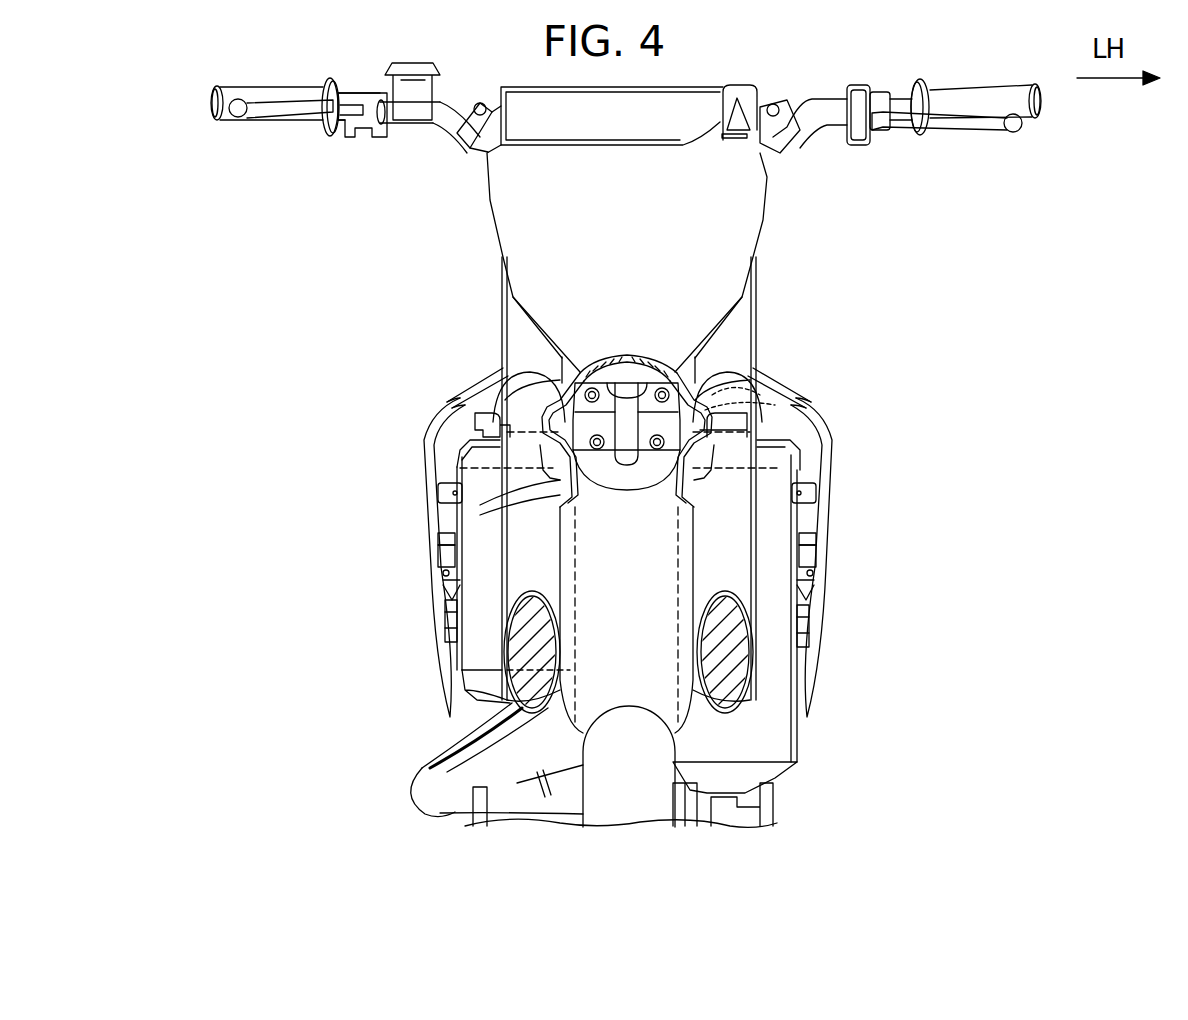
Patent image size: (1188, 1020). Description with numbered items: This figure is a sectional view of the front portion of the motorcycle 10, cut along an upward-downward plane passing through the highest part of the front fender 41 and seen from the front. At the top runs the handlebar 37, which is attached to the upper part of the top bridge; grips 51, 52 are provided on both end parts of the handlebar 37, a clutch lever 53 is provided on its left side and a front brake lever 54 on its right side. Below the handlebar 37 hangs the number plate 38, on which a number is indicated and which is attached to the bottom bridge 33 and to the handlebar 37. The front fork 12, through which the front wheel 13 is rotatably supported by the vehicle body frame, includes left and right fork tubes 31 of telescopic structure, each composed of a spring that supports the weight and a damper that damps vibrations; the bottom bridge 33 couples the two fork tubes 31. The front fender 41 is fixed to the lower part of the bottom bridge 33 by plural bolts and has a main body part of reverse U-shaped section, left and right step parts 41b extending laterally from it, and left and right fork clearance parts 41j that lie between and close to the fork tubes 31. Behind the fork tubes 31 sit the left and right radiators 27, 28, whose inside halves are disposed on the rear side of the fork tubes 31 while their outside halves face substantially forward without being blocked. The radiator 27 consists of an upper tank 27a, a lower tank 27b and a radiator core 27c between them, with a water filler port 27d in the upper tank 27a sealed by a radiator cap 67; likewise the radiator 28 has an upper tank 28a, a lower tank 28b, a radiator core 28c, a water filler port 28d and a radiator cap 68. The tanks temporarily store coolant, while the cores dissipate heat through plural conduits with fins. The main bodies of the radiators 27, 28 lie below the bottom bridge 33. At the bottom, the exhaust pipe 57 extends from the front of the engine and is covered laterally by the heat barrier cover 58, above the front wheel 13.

The motorcycle 10 is at (278, 300).
The front fork 12 is at (757, 297).
The front wheel 13 is at (629, 815).
The radiator 27 is at (795, 560).
The upper tank 27a is at (772, 455).
The lower tank 27b is at (765, 765).
The radiator core 27c is at (783, 622).
The water filler port 27d is at (790, 430).
The radiator 28 is at (448, 588).
The upper tank 28a is at (462, 443).
The lower tank 28b is at (476, 684).
The radiator core 28c is at (468, 608).
The water filler port 28d is at (477, 413).
The fork tubes 31 is at (512, 341).
The bottom bridge 33 is at (790, 384).
The handlebar 37 is at (262, 86).
The number plate 38 is at (517, 203).
The front fender 41 is at (603, 352).
The step parts 41b is at (503, 372).
The fork clearance parts 41j is at (557, 483).
The grip 51 is at (985, 90).
The grip 52 is at (282, 88).
The clutch lever 53 is at (978, 127).
The front brake lever 54 is at (268, 114).
The exhaust pipe 57 is at (435, 800).
The heat barrier cover 58 is at (412, 752).
The radiator cap 67 is at (825, 406).
The radiator cap 68 is at (487, 398).